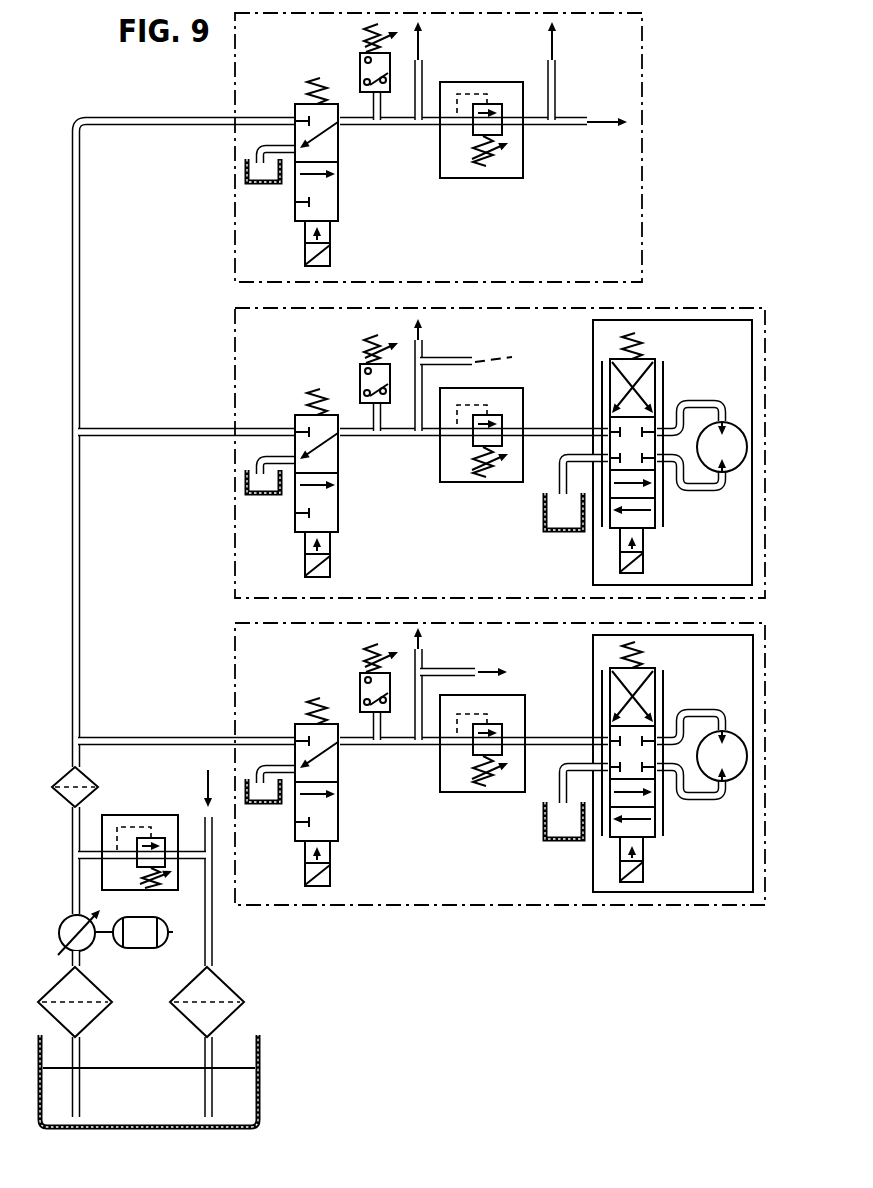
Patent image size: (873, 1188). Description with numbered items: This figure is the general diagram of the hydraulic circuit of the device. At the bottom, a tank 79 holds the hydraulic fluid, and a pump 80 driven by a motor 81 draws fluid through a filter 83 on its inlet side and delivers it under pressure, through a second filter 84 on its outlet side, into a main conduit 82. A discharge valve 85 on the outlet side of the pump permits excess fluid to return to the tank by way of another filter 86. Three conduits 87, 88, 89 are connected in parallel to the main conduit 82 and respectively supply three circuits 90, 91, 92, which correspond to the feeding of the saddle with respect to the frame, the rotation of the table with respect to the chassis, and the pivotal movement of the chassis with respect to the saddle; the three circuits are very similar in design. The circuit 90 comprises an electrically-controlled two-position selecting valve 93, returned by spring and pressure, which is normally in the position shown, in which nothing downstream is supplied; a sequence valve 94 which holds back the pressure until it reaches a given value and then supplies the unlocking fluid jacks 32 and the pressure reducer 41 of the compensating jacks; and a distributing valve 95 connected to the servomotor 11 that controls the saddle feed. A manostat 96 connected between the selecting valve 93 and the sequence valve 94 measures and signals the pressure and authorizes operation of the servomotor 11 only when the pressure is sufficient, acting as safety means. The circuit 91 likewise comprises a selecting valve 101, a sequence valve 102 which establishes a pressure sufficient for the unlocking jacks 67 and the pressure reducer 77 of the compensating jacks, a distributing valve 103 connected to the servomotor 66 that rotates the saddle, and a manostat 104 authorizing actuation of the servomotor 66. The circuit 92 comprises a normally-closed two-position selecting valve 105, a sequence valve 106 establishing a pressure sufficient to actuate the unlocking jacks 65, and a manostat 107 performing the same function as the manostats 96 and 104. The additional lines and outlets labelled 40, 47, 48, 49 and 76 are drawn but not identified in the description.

The servomotor 11 is at (742, 732).
The unlocking fluid jacks 32 is at (660, 763).
The exhaust line 40 is at (412, 690).
The pressure reducer 41 is at (494, 649).
The pressure line 47 is at (537, 127).
The exhaust line 48 is at (556, 88).
The output line 49 is at (570, 118).
The unlocking jacks 65 is at (463, 69).
The servomotor 66 is at (740, 425).
The unlocking jacks 67 is at (655, 452).
The exhaust line 76 is at (412, 382).
The pressure reducer 77 is at (493, 335).
The tank 79 is at (228, 1092).
The pump 80 is at (90, 947).
The motor 81 is at (140, 934).
The main conduit 82 is at (80, 622).
The filter 83 is at (97, 1018).
The filter 84 is at (92, 774).
The discharge valve 85 is at (148, 815).
The filter 86 is at (228, 982).
The conduit 87 is at (183, 737).
The conduit 88 is at (183, 428).
The conduit 89 is at (183, 117).
The circuit 90 is at (228, 657).
The circuit 91 is at (228, 522).
The circuit 92 is at (228, 208).
The selecting valve 93 is at (339, 822).
The sequence valve 94 is at (480, 792).
The distributing valve 95 is at (650, 838).
The manostat 96 is at (358, 678).
The selecting valve 101 is at (339, 515).
The sequence valve 102 is at (475, 482).
The distributing valve 103 is at (650, 530).
The manostat 104 is at (358, 363).
The selecting valve 105 is at (339, 208).
The sequence valve 106 is at (457, 178).
The manostat 107 is at (358, 57).